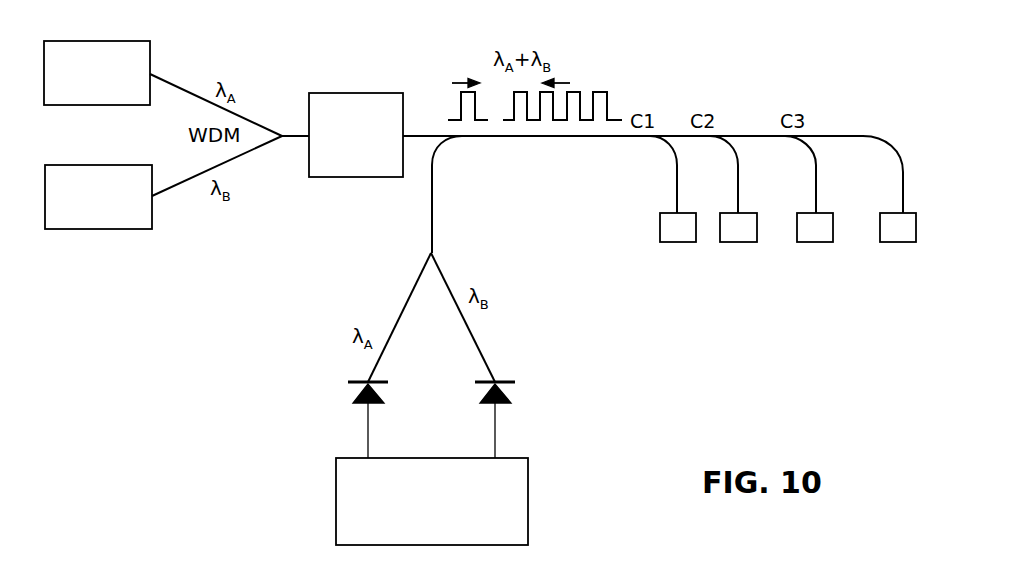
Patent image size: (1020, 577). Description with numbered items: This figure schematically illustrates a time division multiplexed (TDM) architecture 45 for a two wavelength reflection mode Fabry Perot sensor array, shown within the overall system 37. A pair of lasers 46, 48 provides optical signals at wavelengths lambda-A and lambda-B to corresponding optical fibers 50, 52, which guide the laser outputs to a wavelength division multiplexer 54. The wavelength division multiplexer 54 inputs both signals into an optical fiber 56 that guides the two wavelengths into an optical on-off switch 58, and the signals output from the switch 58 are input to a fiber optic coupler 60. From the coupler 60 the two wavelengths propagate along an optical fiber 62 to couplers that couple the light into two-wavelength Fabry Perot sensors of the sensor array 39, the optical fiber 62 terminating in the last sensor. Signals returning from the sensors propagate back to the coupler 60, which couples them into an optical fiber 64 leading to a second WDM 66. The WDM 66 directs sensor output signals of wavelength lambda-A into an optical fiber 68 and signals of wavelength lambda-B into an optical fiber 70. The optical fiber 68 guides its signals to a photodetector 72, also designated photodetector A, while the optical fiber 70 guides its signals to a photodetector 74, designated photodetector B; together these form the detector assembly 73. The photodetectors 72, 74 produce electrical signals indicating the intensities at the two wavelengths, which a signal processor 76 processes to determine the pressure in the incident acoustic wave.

The optical sensing system 37 is at (146, 343).
The sensor array 39 is at (824, 288).
The time division multiplexed (TDM) architecture 45 is at (756, 315).
The laser 46 is at (120, 106).
The laser 48 is at (80, 230).
The optical fiber 50 is at (187, 88).
The optical fiber 52 is at (185, 182).
The wavelength division multiplexer 54 is at (276, 160).
The optical fiber 56 is at (292, 130).
The optical on-off switch 58 is at (355, 93).
The fiber optic coupler 60 is at (474, 152).
The optical fiber 62 is at (572, 138).
The optical fiber 64 is at (430, 203).
The WDM 66 is at (452, 243).
The optical fiber 68 is at (400, 303).
The optical fiber 70 is at (470, 338).
The photodetector 72 is at (360, 381).
The detector assembly 73 is at (278, 328).
The photodetector 74 is at (500, 381).
The signal processor 76 is at (336, 496).